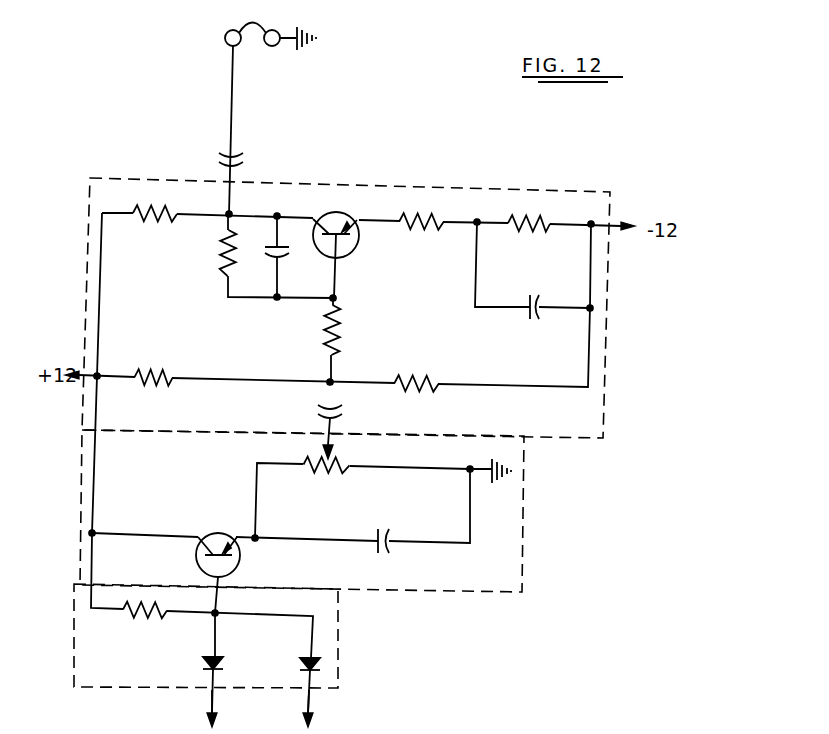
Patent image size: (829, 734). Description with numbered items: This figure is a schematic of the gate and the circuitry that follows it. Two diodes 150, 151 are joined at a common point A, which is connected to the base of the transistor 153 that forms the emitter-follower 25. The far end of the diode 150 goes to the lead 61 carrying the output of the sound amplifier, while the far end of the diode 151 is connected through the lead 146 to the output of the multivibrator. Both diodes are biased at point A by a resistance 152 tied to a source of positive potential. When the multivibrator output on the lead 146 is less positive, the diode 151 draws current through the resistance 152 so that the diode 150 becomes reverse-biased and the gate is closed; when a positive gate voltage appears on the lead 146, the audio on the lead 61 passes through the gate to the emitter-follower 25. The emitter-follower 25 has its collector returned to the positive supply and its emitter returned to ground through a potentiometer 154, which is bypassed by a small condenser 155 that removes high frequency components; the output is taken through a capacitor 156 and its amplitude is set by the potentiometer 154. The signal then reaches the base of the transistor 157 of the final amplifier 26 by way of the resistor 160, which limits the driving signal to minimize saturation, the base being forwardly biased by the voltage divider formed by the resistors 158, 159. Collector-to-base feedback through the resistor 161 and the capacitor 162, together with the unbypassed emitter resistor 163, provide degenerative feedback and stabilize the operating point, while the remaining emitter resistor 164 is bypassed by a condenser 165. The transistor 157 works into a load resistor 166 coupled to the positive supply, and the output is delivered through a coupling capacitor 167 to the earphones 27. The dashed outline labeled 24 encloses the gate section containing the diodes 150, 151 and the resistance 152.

The earphones 27 is at (226, 32).
The coupling capacitor 167 is at (238, 163).
The load resistor 166 is at (148, 223).
The resistor 161 is at (223, 263).
The capacitor 162 is at (279, 262).
The transistor 157 is at (349, 255).
The unbypassed resistor 163 is at (430, 225).
The resistor 164 is at (531, 226).
The condenser 165 is at (537, 298).
The resistor 160 is at (340, 330).
The resistor 158 is at (153, 369).
The resistor 159 is at (406, 378).
The capacitor 156 is at (334, 418).
The final amplifier 26 is at (605, 385).
The transistor 153 is at (216, 531).
The potentiometer 154 is at (334, 473).
The condenser 155 is at (383, 529).
The emitter-follower 25 is at (522, 558).
The resistance 152 is at (143, 617).
The diode 150 is at (212, 657).
The diode 151 is at (302, 663).
The common point A is at (216, 614).
The output circuit 24 is at (340, 660).
The lead 61 is at (210, 695).
The lead 146 is at (312, 705).